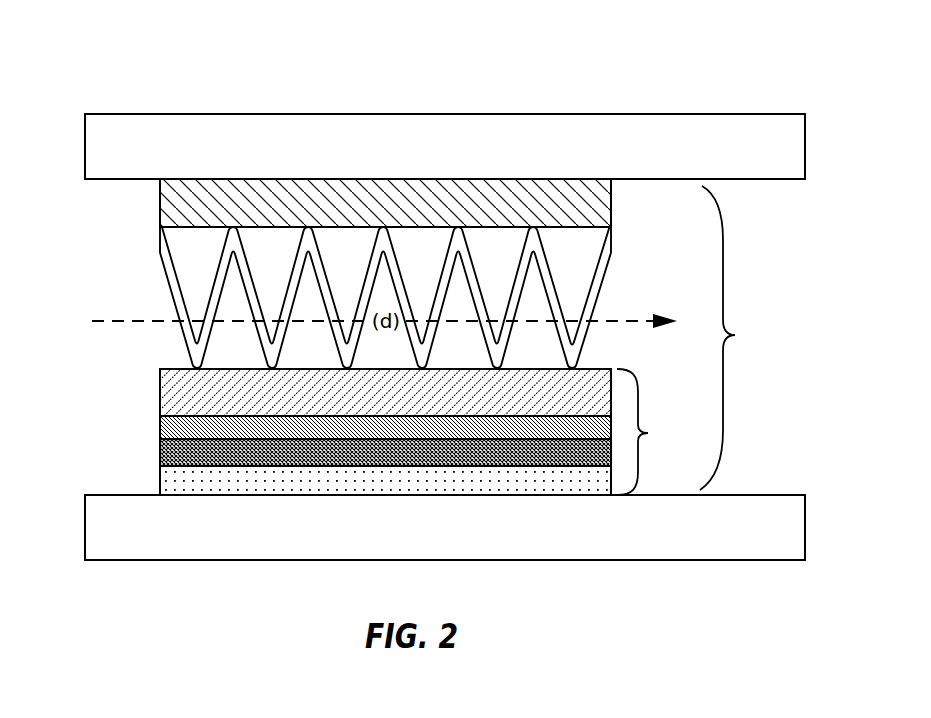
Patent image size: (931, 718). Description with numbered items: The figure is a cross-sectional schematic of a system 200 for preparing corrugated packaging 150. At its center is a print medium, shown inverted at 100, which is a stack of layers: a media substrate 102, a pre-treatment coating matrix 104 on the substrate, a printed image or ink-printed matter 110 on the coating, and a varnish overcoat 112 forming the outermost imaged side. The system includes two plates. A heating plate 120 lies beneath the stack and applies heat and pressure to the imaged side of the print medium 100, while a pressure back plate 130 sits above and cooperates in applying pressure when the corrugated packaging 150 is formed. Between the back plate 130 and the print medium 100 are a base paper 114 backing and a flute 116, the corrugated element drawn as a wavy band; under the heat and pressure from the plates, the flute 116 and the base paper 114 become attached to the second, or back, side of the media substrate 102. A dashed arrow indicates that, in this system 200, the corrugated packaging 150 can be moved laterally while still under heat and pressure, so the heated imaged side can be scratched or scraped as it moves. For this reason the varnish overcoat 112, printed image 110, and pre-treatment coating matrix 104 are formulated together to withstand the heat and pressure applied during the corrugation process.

The system 200 is at (155, 43).
The pressure back plate 130 is at (423, 158).
The base paper 114 is at (173, 209).
The flute 116 is at (187, 362).
The media substrate 102 is at (160, 400).
The pre-treatment coating matrix 104 is at (160, 430).
The printed image 110 is at (160, 458).
The varnish overcoat 112 is at (160, 485).
The print medium 100 is at (656, 432).
The corrugated packaging 150 is at (744, 338).
The heating plate 120 is at (467, 539).